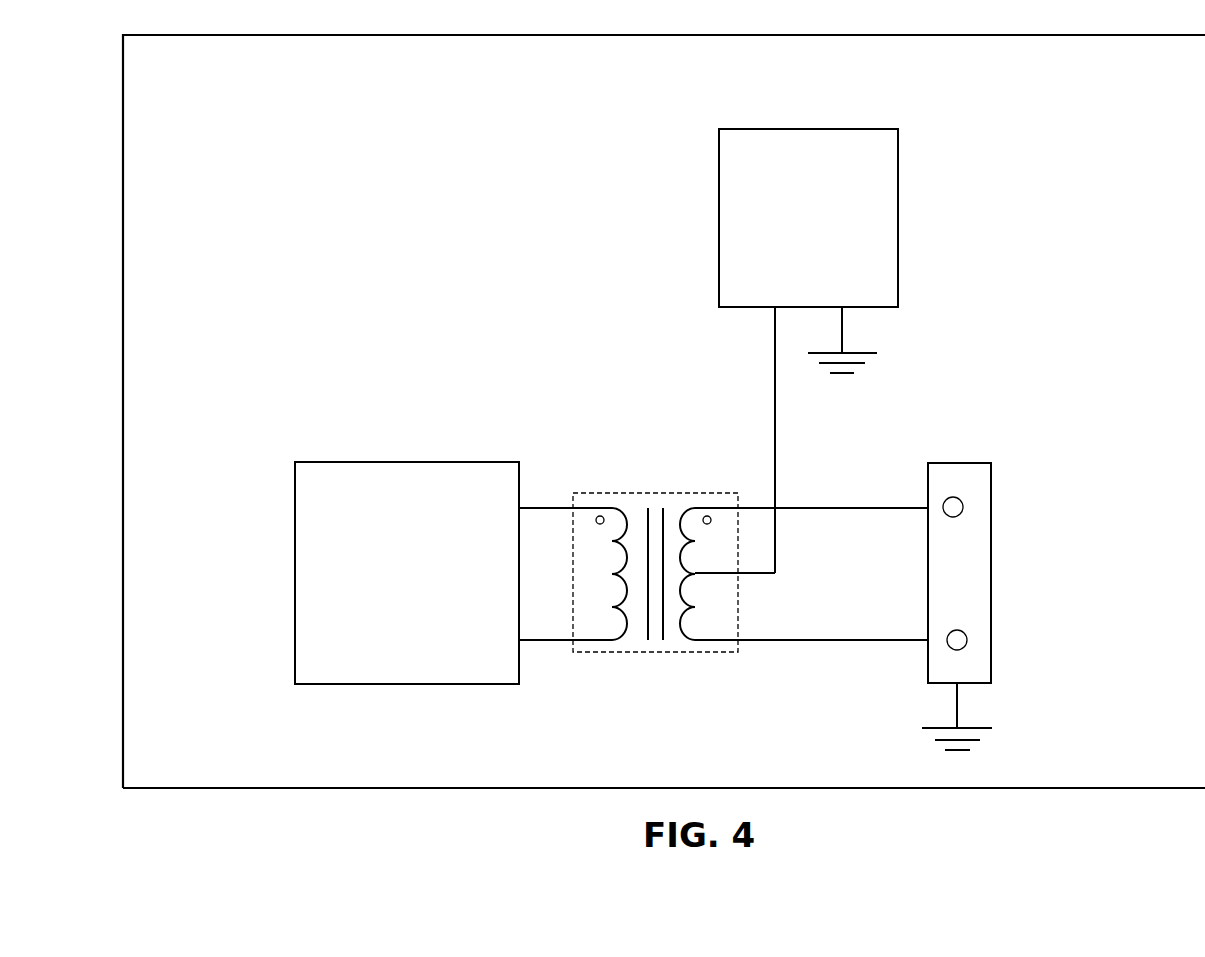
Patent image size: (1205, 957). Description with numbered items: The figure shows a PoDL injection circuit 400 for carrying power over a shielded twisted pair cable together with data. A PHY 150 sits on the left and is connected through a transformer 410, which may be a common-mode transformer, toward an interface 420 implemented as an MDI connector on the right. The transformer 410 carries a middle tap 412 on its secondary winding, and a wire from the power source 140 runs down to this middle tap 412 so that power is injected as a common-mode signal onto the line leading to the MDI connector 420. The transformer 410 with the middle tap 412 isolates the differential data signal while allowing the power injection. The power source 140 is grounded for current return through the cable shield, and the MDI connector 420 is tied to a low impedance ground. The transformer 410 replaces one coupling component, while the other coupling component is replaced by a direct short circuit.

The PoDL injection circuit 400 is at (220, 97).
The power source 140 is at (756, 129).
The PHY 150 is at (353, 461).
The transformer 410 is at (578, 493).
The middle tap 412 is at (734, 589).
The interface 420 is at (978, 461).